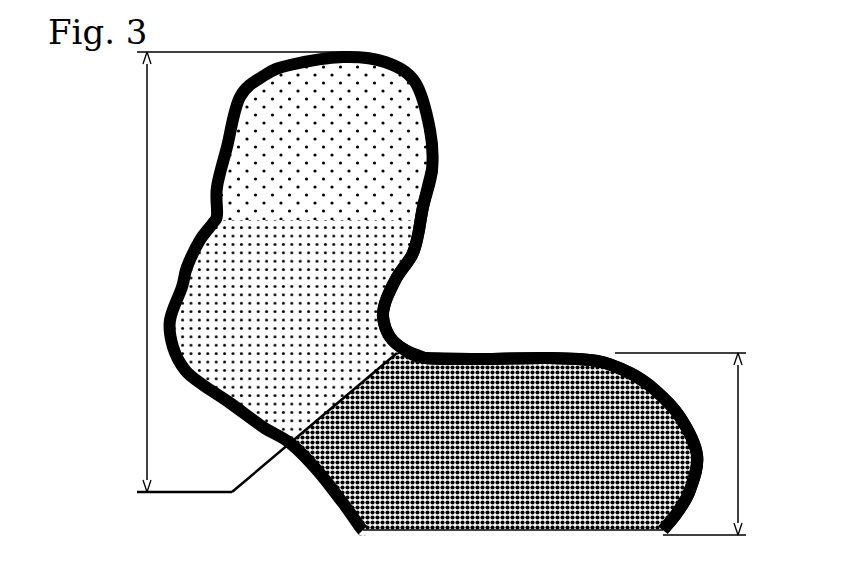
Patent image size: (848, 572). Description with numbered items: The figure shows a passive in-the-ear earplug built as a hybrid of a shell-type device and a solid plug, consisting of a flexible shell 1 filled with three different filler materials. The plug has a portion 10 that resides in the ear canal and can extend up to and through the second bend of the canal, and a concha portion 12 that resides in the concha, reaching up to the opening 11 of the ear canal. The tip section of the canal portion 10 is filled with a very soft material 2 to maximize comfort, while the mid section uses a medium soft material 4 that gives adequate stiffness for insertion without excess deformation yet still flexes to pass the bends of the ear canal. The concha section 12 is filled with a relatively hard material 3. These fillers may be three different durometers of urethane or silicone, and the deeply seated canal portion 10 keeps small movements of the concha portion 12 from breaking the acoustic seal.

The flexible shell 1 is at (425, 95).
The very soft filler material 2 is at (370, 171).
The relatively hard filler material 3 is at (500, 353).
The medium soft filler material 4 is at (412, 240).
The ear canal portion 10 is at (146, 255).
The opening of the ear canal 11 is at (400, 340).
The concha portion 12 is at (738, 435).